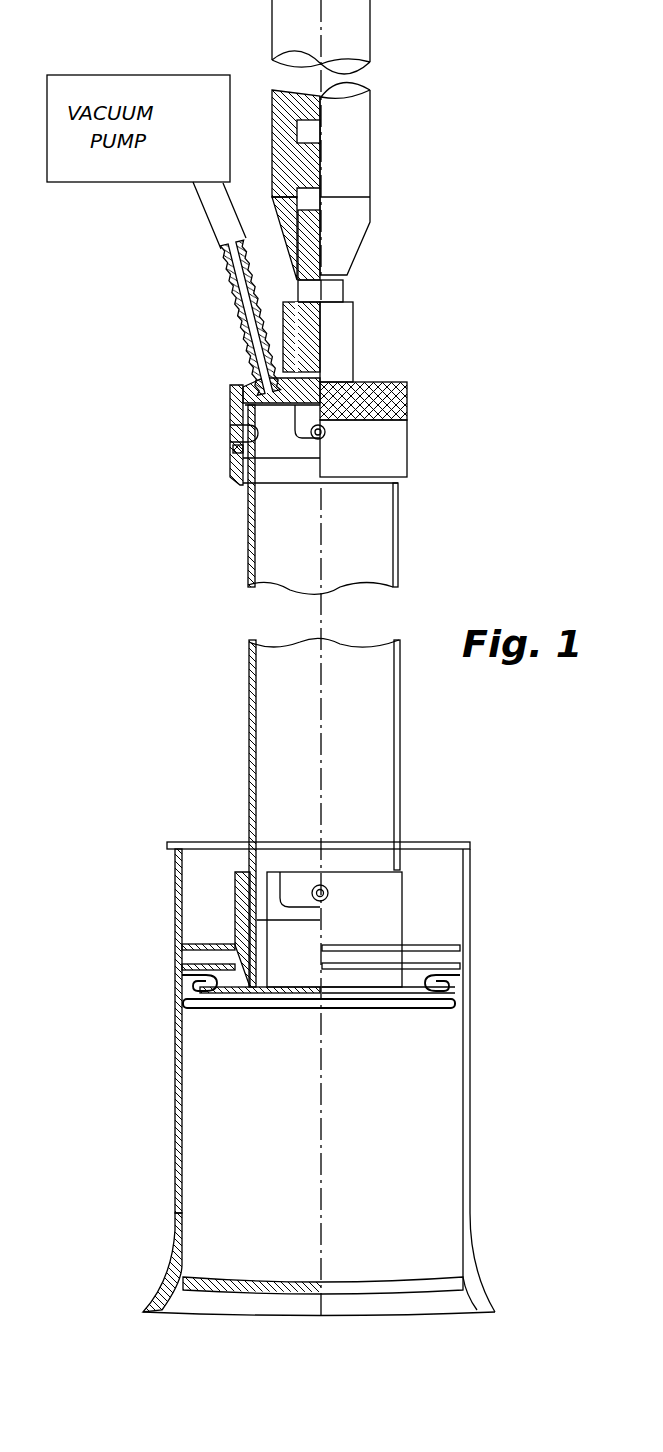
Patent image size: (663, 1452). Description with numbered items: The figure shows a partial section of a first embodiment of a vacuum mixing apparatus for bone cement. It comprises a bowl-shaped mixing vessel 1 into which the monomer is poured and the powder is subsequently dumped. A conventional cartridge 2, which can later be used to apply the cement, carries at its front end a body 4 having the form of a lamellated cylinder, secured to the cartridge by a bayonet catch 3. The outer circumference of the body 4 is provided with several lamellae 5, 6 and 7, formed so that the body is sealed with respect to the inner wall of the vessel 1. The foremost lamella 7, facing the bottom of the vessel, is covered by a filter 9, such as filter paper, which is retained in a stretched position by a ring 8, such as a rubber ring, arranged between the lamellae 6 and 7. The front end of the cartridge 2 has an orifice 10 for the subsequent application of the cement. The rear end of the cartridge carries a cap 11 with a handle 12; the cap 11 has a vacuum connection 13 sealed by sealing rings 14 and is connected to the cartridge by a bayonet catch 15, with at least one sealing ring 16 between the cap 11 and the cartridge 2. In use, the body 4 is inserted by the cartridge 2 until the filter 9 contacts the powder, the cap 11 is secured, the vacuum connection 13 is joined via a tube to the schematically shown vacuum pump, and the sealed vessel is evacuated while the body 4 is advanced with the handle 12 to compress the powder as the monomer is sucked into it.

The mixing vessel 1 is at (463, 887).
The cartridge 2 is at (402, 737).
The bayonet catch 3 is at (329, 894).
The body 4 is at (388, 957).
The lamella 5 is at (440, 940).
The lamella 6 is at (455, 975).
The lamella 7 is at (452, 1008).
The ring 8 is at (182, 987).
The filter 9 is at (207, 1008).
The orifice 10 is at (240, 950).
The cap 11 is at (393, 440).
The handle 12 is at (355, 143).
The vacuum connection 13 is at (229, 285).
The sealing rings 14 is at (243, 383).
The bayonet catch 15 is at (317, 437).
The sealing ring 16 is at (232, 448).